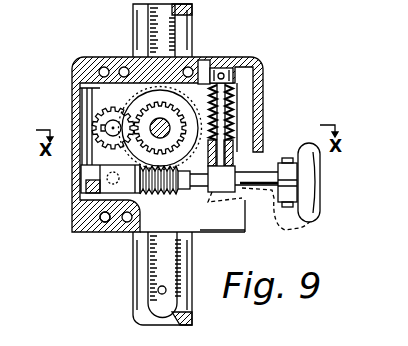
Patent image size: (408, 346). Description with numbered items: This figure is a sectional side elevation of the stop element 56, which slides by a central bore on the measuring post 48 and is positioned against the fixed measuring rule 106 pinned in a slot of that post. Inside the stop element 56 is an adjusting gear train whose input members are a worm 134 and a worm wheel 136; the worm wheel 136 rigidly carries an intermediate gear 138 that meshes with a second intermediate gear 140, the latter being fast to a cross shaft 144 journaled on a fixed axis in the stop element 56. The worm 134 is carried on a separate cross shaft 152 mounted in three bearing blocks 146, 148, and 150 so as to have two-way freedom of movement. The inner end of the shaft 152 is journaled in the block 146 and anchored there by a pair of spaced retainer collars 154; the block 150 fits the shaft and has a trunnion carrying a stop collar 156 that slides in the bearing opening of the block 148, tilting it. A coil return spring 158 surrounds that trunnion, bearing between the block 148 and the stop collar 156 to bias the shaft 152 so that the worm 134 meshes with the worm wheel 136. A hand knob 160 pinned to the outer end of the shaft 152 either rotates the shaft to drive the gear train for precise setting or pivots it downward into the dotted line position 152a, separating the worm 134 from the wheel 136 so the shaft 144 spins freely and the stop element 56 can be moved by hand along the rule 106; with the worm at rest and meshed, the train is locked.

The measuring post 48 is at (137, 279).
The stop element 56 is at (229, 57).
The measuring rule 106 is at (156, 18).
The worm 134 is at (165, 195).
The worm wheel 136 is at (145, 86).
The intermediate gear 138 is at (221, 55).
The intermediate gear 140 is at (107, 108).
The cross shaft 144 is at (104, 121).
The bearing block 146 is at (109, 180).
The bearing block 148 is at (230, 160).
The bearing block 150 is at (84, 174).
The cross shaft 152 is at (199, 191).
The dotted line position 152a is at (279, 226).
The retainer collars 154 is at (86, 226).
The stop collar 156 is at (233, 76).
The coil return spring 158 is at (233, 110).
The hand knob 160 is at (317, 212).